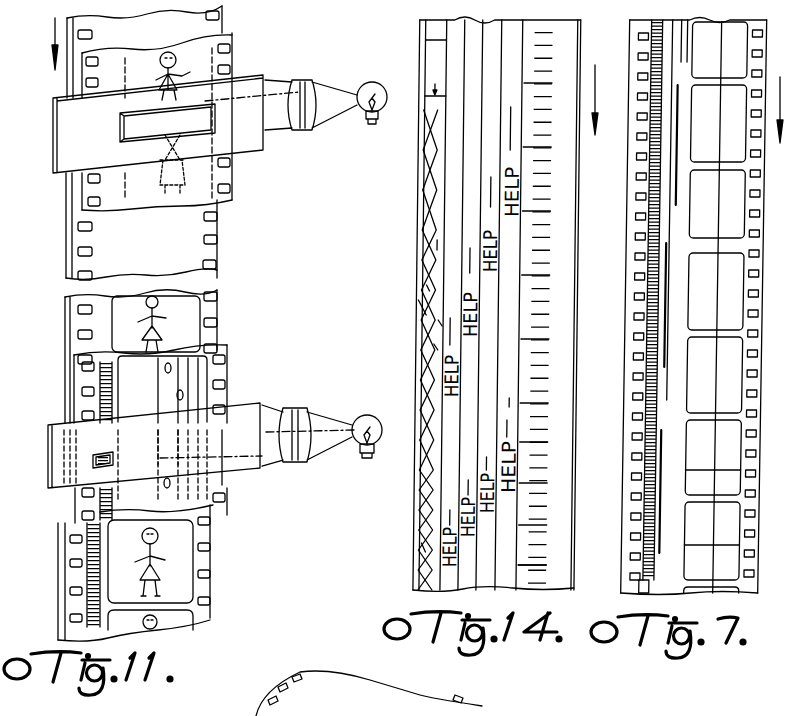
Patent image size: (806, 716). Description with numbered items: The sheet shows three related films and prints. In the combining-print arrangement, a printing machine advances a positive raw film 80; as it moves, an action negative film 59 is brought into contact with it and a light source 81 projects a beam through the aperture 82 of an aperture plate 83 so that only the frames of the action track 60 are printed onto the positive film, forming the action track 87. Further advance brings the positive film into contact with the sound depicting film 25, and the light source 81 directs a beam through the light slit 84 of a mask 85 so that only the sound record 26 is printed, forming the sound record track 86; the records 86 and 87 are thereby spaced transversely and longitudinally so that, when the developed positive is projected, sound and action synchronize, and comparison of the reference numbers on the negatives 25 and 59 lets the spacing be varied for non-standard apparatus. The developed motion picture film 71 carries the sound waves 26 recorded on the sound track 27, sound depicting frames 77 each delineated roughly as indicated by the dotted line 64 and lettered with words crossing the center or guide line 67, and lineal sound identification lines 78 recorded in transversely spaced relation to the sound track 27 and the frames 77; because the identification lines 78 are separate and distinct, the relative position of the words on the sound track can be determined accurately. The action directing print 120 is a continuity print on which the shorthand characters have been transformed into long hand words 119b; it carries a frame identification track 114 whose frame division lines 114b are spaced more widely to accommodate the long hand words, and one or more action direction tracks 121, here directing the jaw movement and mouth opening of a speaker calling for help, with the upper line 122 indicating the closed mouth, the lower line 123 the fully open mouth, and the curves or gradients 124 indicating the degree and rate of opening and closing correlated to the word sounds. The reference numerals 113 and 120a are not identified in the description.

In FIG. 11, the positive raw film 80 is at (222, 15).
In FIG. 11, the action negative film 59 is at (233, 50).
In FIG. 11, the aperture 82 is at (203, 107).
In FIG. 11, the aperture plate 83 is at (55, 137).
In FIG. 11, the action track 60 is at (200, 177).
In FIG. 11, the action track 87 is at (193, 247).
In FIG. 11, the sound depicting film 25 is at (227, 377).
In FIG. 11, the sound waves 26 is at (103, 392).
In FIG. 7, the sound waves 26 is at (655, 340).
In FIG. 11, the mask 85 is at (50, 462).
In FIG. 11, the light slit 84 is at (97, 468).
In FIG. 11, the sound record track 86 is at (93, 558).
In FIG. 11, the light source 81 is at (380, 86).
In FIG. 14, the record lines 113 is at (520, 37).
In FIG. 14, the motion picture frame identification track 114 is at (547, 165).
In FIG. 14, the frame division lines 114b is at (542, 565).
In FIG. 14, the long hand words 119b is at (490, 242).
In FIG. 14, the action directing print 120 is at (438, 253).
In FIG. 14, the record portion 120a is at (433, 288).
In FIG. 14, the upper line 122 is at (424, 307).
In FIG. 14, the lower line 123 is at (446, 323).
In FIG. 14, the action direction track 121 is at (441, 347).
In FIG. 14, the gradients 124 is at (432, 547).
In FIG. 7, the sound identification line 78 is at (683, 42).
In FIG. 7, the motion picture film 71 is at (627, 250).
In FIG. 7, the sound track 27 is at (652, 377).
In FIG. 7, the sound depicting frames 77 is at (732, 398).
In FIG. 7, the dotted line 64 is at (733, 470).
In FIG. 7, the guide line 67 is at (713, 560).